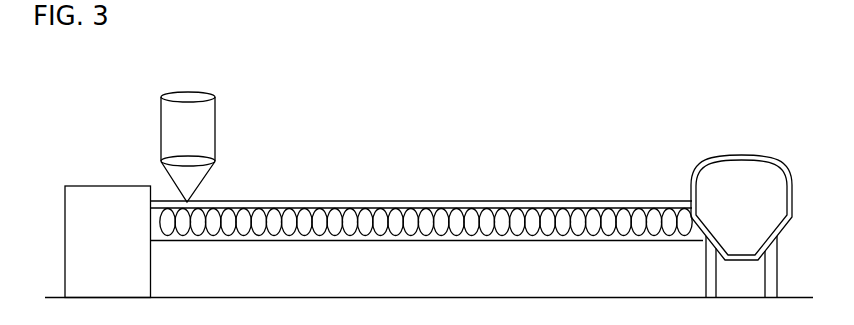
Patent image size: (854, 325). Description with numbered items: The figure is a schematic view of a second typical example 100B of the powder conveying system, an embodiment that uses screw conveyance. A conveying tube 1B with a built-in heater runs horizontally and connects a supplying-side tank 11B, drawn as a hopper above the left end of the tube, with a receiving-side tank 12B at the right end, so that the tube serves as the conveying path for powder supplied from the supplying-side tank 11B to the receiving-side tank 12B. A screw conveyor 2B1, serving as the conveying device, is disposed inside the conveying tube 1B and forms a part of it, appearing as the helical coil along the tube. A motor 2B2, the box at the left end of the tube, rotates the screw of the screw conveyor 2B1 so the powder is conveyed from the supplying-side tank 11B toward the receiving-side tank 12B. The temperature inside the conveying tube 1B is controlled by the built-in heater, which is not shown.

The second typical example of the powder conveying system 100B is at (494, 120).
The conveying tube with a built-in heater 1B is at (332, 200).
The screw conveyor 2B1 is at (350, 241).
The motor 2B2 is at (130, 185).
The supplying-side tank 11B is at (185, 91).
The receiving-side tank 12B is at (743, 155).